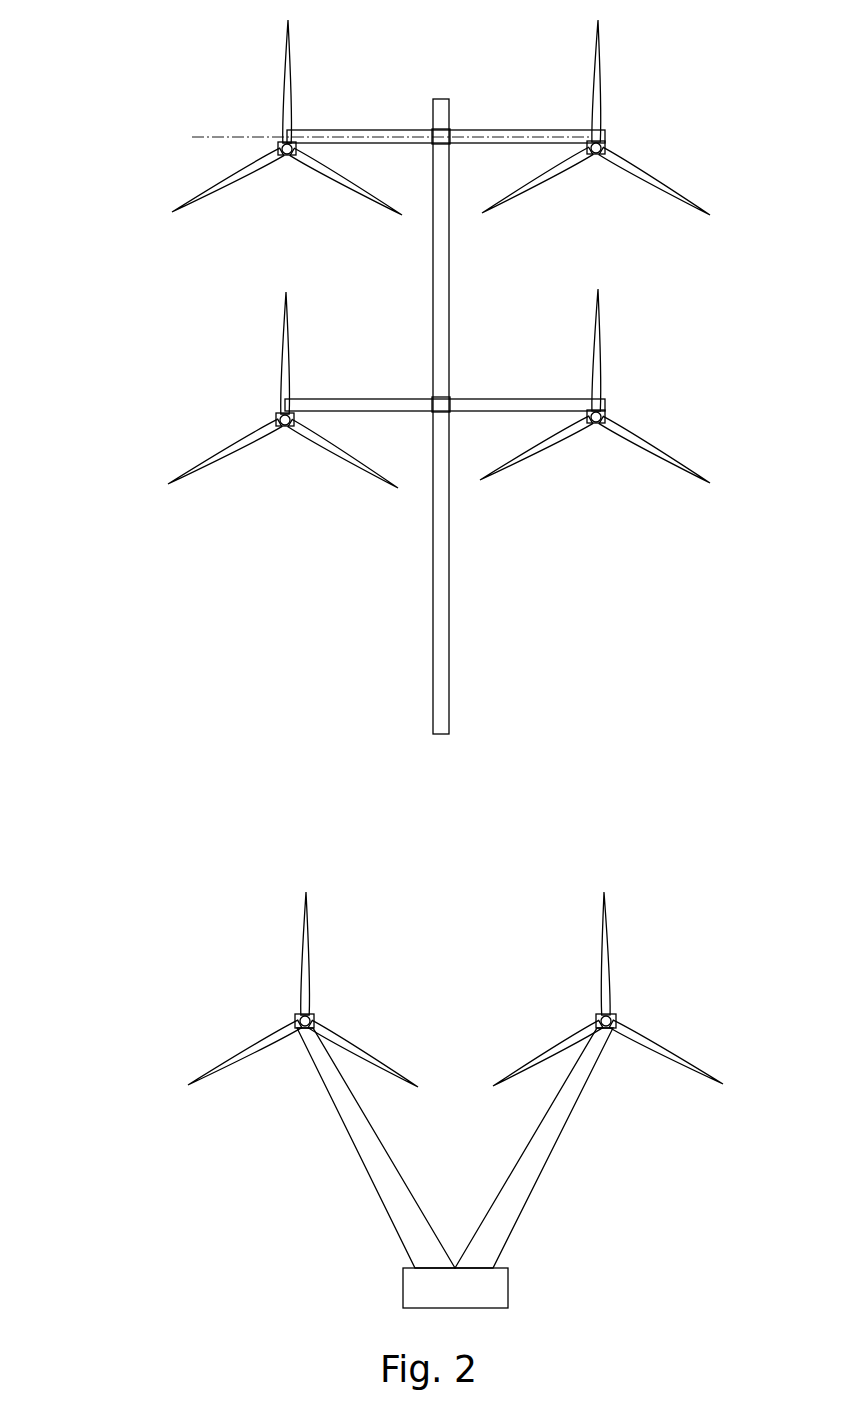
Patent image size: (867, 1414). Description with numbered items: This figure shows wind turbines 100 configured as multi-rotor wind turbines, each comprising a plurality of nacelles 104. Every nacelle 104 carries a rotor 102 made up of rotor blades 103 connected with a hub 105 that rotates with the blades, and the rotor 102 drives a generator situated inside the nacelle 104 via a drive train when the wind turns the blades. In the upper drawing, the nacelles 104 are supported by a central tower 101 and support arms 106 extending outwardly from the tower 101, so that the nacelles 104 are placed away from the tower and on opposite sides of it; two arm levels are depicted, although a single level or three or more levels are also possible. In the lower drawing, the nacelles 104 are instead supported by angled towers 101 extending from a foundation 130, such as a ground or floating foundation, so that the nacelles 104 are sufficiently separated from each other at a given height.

The wind turbine 100 is at (100, 108).
The tower 101 is at (429, 591).
The rotor 102 is at (618, 137).
The rotor blade 103 is at (708, 199).
The nacelle 104 is at (268, 417).
The hub 105 is at (613, 413).
The support arm 106 is at (500, 127).
The foundation 130 is at (512, 1280).